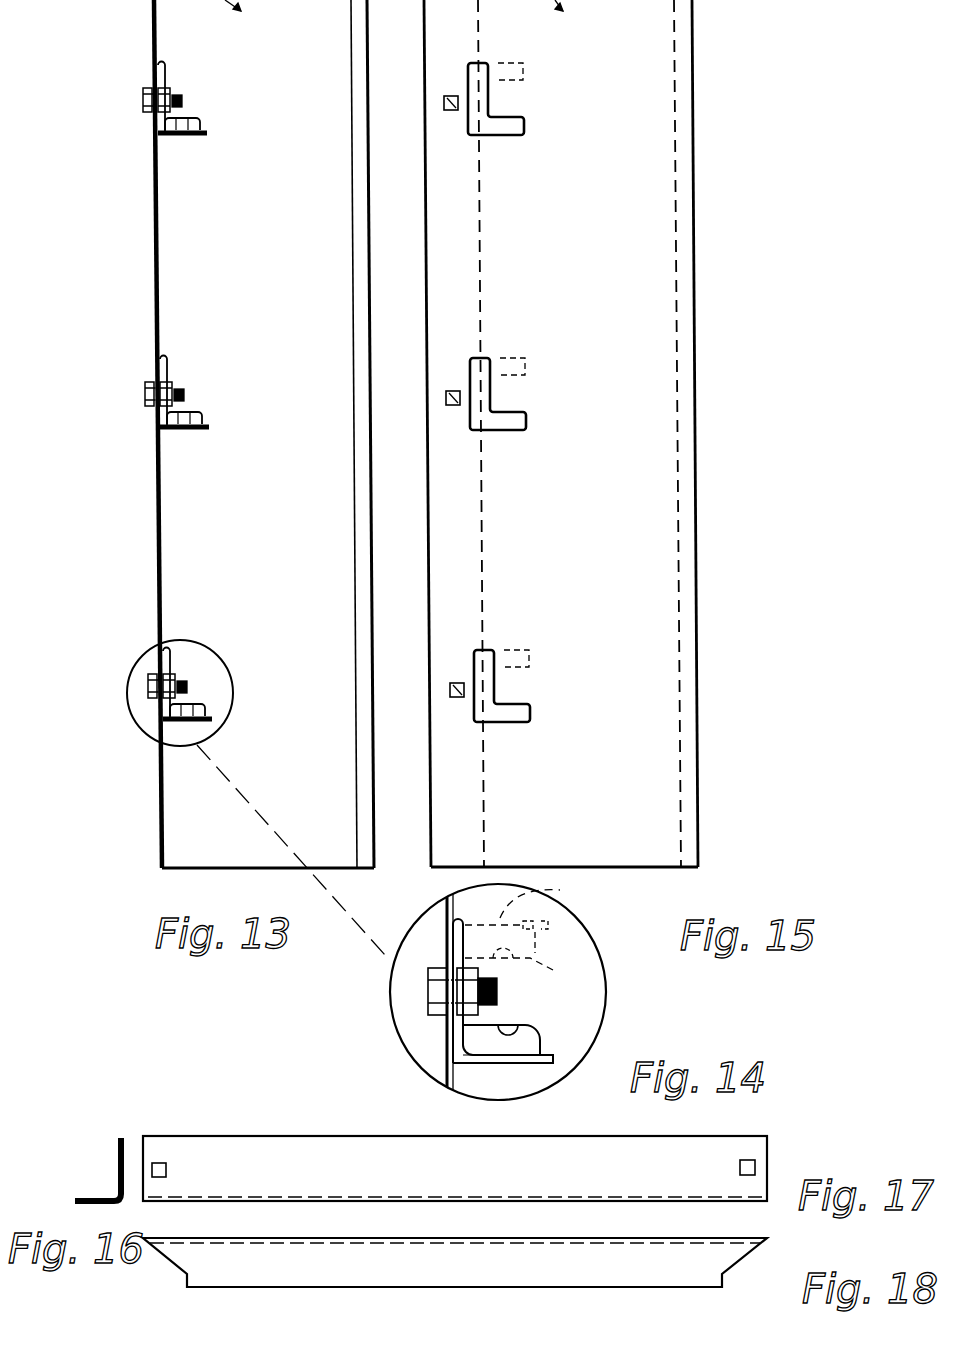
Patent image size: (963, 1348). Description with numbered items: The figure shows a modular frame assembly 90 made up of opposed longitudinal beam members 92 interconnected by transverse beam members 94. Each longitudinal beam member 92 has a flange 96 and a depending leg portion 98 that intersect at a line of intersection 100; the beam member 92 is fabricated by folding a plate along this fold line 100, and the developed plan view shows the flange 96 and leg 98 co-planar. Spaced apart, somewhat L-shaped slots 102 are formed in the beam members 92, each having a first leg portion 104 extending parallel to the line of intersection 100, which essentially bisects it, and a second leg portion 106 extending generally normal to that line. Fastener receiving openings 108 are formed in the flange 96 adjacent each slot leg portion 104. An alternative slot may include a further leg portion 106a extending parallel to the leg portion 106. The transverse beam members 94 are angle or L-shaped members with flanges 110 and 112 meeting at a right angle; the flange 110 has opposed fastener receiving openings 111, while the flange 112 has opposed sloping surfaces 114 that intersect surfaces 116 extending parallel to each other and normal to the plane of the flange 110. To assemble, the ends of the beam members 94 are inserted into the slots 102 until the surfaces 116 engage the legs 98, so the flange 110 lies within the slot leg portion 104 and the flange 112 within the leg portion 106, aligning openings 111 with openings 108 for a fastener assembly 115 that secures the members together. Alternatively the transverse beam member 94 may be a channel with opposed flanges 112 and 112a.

In FIG. 13, the modular frame assembly 90 is at (119, 549).
In FIG. 13, the longitudinal beam member 92 is at (362, 434).
In FIG. 15, the longitudinal beam member 92 is at (425, 515).
In FIG. 13, the transverse beam member 94 is at (168, 122).
In FIG. 14, the transverse beam member 94 is at (446, 948).
In FIG. 16, the transverse beam member 94 is at (116, 1168).
In FIG. 17, the transverse beam member 94 is at (323, 1140).
In FIG. 18, the transverse beam member 94 is at (528, 1288).
In FIG. 13, the flange 96 is at (180, 838).
In FIG. 15, the flange 96 is at (430, 787).
In FIG. 14, the flange 96 is at (447, 1033).
In FIG. 13, the depending leg portion 98 is at (262, 858).
In FIG. 15, the depending leg portion 98 is at (700, 795).
In FIG. 14, the depending leg portion 98 is at (578, 942).
In FIG. 15, the line of intersection 100 is at (485, 543).
In FIG. 13, the L-shaped slot 102 is at (185, 133).
In FIG. 15, the L-shaped slot 102 is at (492, 100).
In FIG. 14, the L-shaped slot 102 is at (488, 1027).
In FIG. 15, the first leg portion 104 is at (470, 85).
In FIG. 14, the first leg portion 104 is at (446, 942).
In FIG. 13, the second leg portion 106 is at (200, 723).
In FIG. 15, the second leg portion 106 is at (504, 133).
In FIG. 14, the second leg portion 106 is at (522, 1030).
In FIG. 15, the second leg portion 106a is at (527, 74).
In FIG. 14, the second leg portion 106a is at (538, 952).
In FIG. 15, the fastener receiving opening 108 is at (452, 110).
In FIG. 14, the flange 110 is at (447, 1047).
In FIG. 16, the flange 110 is at (116, 1150).
In FIG. 17, the flange 110 is at (293, 1147).
In FIG. 18, the flange 110 is at (235, 1238).
In FIG. 17, the fastener receiving opening 111 is at (167, 1168).
In FIG. 14, the flange 112 is at (497, 1062).
In FIG. 16, the flange 112 is at (100, 1197).
In FIG. 18, the flange 112 is at (445, 1288).
In FIG. 14, the flange 112a is at (565, 892).
In FIG. 18, the sloping surface 114 is at (163, 1263).
In FIG. 13, the bolt 115 is at (140, 102).
In FIG. 14, the bolt 115 is at (428, 990).
In FIG. 14, the surface 116 is at (543, 1050).
In FIG. 18, the surface 116 is at (180, 1282).